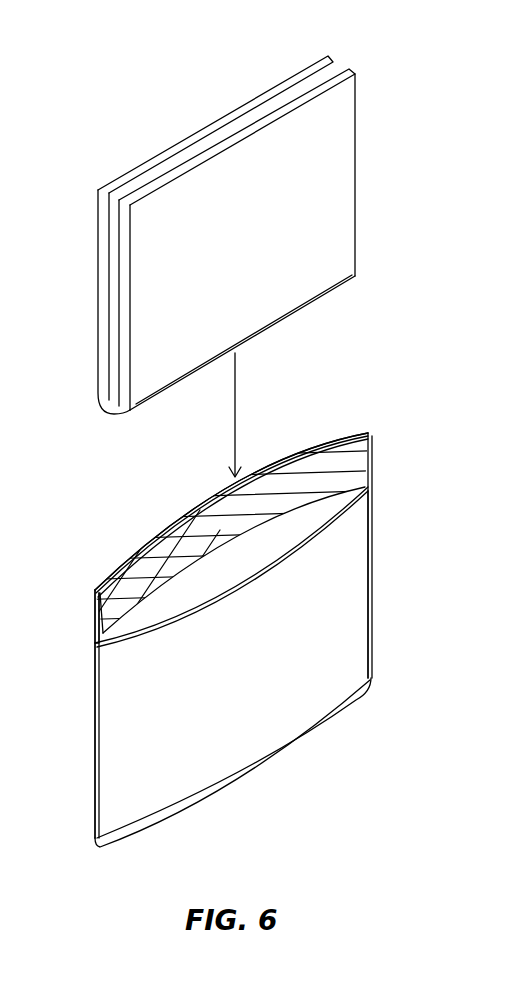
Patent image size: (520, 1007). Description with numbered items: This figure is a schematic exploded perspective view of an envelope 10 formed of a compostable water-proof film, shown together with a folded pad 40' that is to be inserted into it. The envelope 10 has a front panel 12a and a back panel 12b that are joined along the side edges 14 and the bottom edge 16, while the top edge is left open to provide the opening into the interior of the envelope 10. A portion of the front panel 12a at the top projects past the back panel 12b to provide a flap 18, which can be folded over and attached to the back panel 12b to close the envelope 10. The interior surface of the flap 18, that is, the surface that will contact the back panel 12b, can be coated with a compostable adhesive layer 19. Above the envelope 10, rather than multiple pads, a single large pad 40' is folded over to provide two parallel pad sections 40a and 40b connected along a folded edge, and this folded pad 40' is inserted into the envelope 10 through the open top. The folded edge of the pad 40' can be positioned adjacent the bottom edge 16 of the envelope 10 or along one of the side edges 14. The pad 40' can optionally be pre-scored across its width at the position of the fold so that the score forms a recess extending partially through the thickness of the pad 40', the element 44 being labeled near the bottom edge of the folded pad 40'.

The envelope 10 is at (243, 623).
The front panel 12a is at (282, 533).
The back panel 12b is at (320, 653).
The side edges 14 is at (372, 587).
The bottom edge 16 is at (277, 758).
The flap 18 is at (97, 603).
The compostable adhesive layer 19 is at (157, 537).
The pad 40' is at (261, 221).
The pad section 40a is at (147, 159).
The pad section 40b is at (280, 113).
The fold / bottom edge of card 44 is at (285, 317).